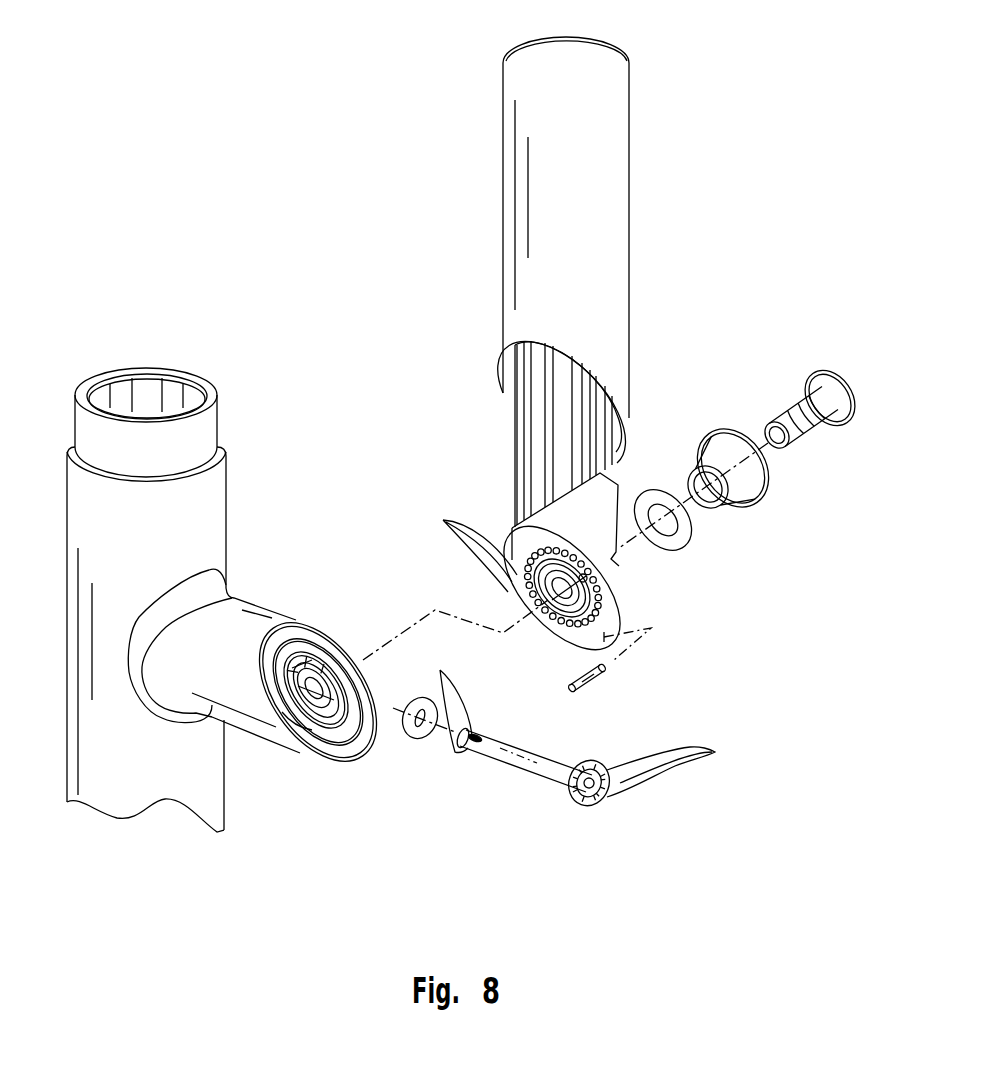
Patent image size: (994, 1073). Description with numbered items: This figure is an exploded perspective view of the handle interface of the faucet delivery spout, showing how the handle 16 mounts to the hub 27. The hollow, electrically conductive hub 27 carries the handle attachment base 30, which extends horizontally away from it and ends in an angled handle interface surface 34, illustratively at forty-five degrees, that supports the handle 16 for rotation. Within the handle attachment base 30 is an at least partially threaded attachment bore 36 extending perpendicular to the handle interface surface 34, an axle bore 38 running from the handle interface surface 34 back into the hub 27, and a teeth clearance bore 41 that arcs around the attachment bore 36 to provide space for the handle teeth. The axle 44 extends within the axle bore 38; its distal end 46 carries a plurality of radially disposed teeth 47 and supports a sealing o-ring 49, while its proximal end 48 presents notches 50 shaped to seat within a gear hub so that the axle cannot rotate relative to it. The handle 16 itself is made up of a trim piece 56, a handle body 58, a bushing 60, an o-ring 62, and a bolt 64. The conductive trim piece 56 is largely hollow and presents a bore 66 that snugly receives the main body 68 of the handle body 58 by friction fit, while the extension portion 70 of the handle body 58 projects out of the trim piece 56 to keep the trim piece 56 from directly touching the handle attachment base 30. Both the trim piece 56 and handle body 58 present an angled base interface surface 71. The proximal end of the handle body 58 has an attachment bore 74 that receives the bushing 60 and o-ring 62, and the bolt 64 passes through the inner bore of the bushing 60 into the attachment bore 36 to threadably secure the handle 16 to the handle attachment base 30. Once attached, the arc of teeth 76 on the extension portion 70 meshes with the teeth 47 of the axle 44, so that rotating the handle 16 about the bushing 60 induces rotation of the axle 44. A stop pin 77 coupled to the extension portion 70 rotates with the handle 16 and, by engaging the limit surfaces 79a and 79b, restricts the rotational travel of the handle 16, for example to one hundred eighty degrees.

The handle 16 is at (571, 350).
The hub 27 is at (218, 492).
The handle attachment base 30 is at (264, 691).
The handle interface surface 34 is at (365, 745).
The attachment bore 36 is at (318, 672).
The axle bore 38 is at (285, 638).
The teeth clearance bore 41 is at (330, 735).
The axle 44 is at (536, 820).
The distal end 46 is at (590, 822).
The teeth 47 is at (708, 752).
The proximal end 48 is at (473, 766).
The sealing o-ring 49 is at (418, 740).
The notches 50 is at (441, 670).
The trim piece 56 is at (612, 183).
The handle body 58 is at (523, 410).
The bushing 60 is at (770, 487).
The o-ring 62 is at (690, 528).
The bolt 64 is at (826, 368).
The bore 66 is at (628, 460).
The main body 68 is at (527, 450).
The extension portion 70 is at (621, 583).
The base interface surface 71 is at (642, 633).
The attachment bore 74 is at (560, 630).
The teeth 76 is at (462, 540).
The stop pin 77 is at (605, 680).
The limit surface 79a is at (368, 672).
The limit surface 79b is at (293, 720).